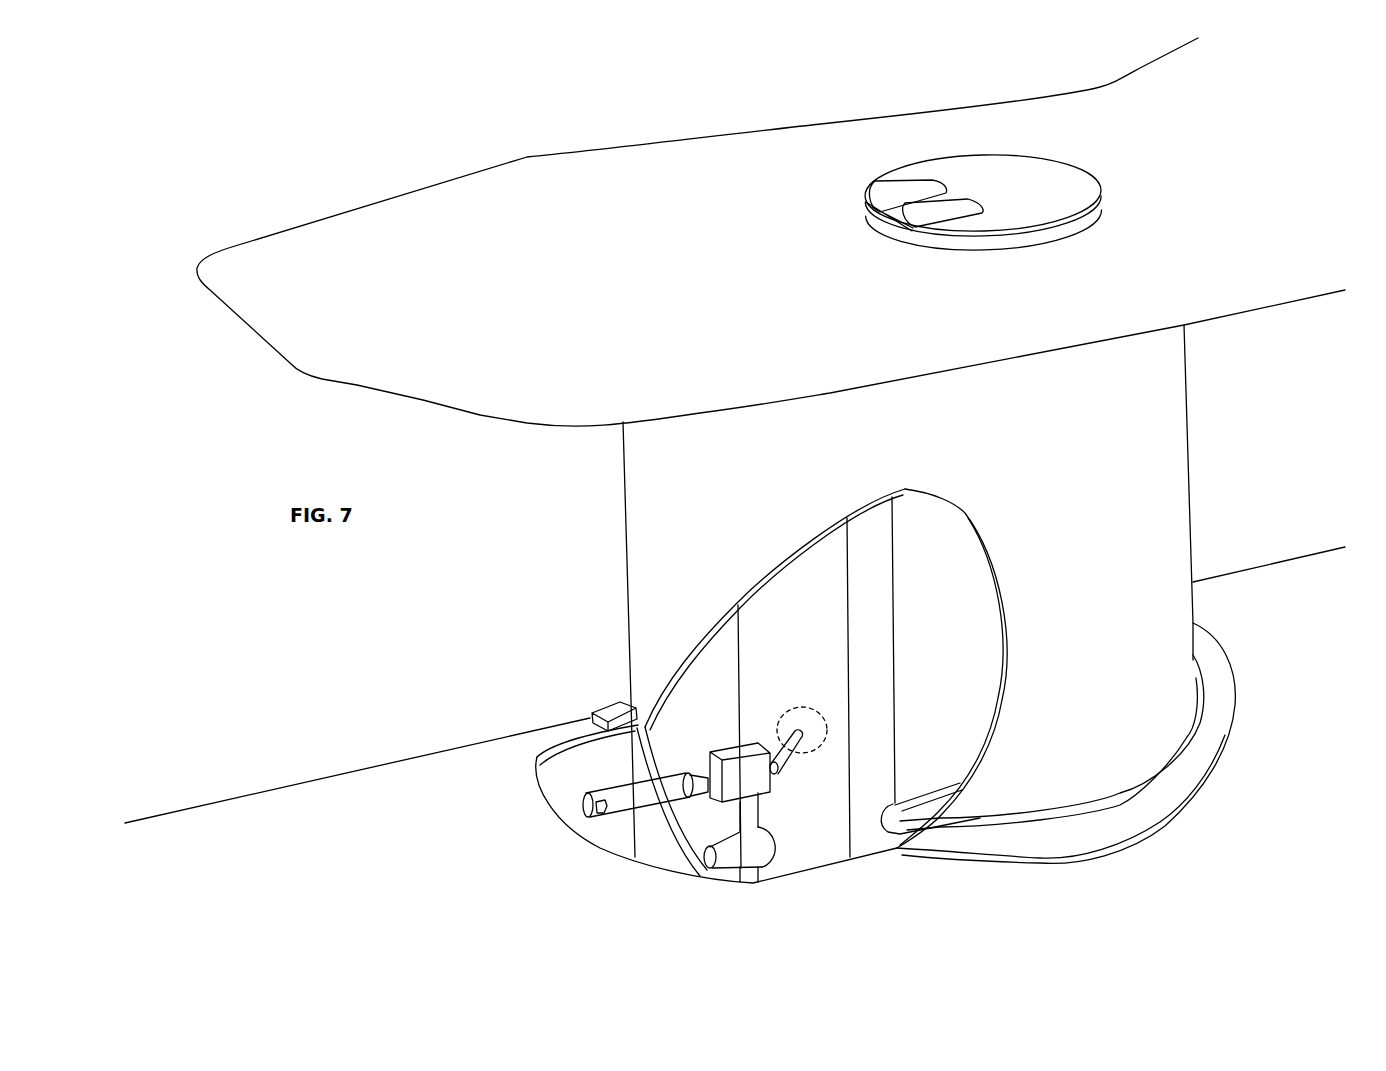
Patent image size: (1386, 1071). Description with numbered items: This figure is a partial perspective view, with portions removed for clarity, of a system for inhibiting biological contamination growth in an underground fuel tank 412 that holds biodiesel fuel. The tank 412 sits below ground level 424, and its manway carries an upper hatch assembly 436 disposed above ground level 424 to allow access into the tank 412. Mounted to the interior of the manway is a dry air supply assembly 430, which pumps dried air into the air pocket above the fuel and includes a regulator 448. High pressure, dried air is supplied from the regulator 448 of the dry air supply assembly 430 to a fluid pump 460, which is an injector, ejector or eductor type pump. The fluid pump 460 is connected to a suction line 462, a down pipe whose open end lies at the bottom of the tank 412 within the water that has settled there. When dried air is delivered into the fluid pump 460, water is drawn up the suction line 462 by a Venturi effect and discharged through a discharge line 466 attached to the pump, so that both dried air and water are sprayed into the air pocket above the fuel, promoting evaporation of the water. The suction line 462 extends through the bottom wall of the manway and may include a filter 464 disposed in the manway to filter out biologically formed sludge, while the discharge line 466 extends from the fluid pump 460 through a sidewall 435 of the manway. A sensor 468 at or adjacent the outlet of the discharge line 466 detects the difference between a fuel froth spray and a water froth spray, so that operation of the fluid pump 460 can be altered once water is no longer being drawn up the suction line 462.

The underground fuel tank 412 is at (370, 770).
The ground level 424 is at (337, 242).
The dry air supply assembly 430 is at (878, 597).
The sidewall of manway 435 is at (638, 525).
The upper hatch assembly 436 is at (1062, 178).
The regulator 448 is at (827, 700).
The fluid pump 460 is at (737, 762).
The suction line 462 is at (758, 807).
The filter 464 is at (727, 857).
The discharge line 466 is at (640, 787).
The sensor 468 is at (600, 823).